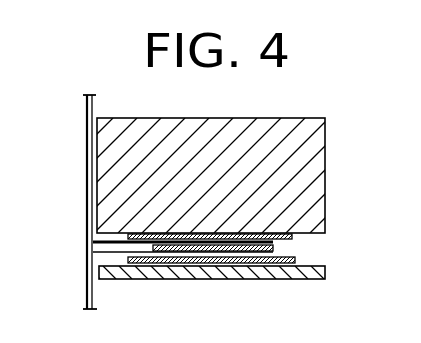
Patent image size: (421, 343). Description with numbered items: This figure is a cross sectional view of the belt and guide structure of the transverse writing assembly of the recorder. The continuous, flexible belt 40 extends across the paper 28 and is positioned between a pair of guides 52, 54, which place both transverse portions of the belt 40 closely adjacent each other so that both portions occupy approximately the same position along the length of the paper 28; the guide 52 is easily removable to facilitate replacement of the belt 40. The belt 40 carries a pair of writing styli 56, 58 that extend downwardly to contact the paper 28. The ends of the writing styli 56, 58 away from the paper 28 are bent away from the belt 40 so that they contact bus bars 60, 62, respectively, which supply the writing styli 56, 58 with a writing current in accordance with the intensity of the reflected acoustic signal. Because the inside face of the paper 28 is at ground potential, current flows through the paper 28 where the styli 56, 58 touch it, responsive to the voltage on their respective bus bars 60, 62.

The paper 28 is at (88, 180).
The guide 52 is at (315, 162).
The bus bar 60 is at (293, 238).
The writing stylus 56 is at (95, 245).
The belt 40 is at (275, 247).
The writing stylus 58 is at (94, 255).
The bus bar 62 is at (306, 266).
The guide 54 is at (192, 275).